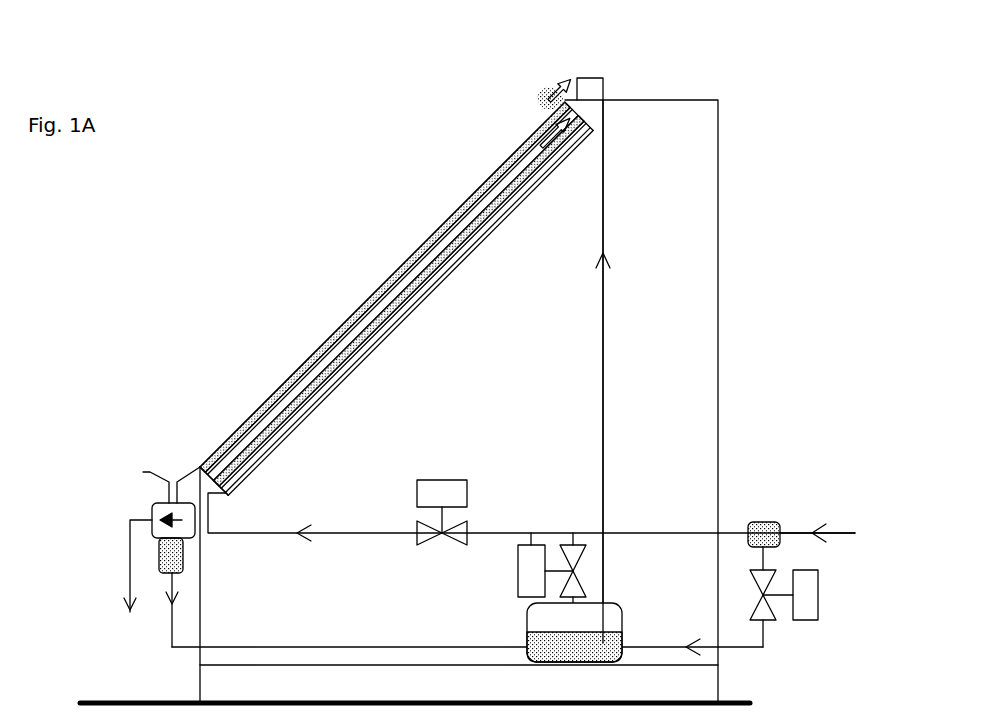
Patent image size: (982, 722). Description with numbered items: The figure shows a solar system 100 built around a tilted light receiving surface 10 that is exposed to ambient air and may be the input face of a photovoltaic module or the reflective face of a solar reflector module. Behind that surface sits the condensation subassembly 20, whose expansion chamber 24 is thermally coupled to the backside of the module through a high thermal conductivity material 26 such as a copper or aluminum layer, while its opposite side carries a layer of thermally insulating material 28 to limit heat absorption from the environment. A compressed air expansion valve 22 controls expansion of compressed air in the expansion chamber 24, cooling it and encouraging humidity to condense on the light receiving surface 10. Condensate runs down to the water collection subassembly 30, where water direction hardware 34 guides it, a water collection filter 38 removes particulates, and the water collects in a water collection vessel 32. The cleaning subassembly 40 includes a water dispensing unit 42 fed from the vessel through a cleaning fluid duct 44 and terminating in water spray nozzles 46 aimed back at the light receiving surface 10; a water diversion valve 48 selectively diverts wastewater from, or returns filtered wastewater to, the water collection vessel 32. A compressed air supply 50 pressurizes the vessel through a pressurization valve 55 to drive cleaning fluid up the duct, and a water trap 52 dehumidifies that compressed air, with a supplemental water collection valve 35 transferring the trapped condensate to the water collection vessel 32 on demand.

The solar system 100 is at (359, 136).
The light receiving surface 10 is at (400, 302).
The condensation subassembly 20 is at (420, 368).
The compressed air expansion valve 22 is at (417, 497).
The expansion chamber 24 is at (380, 298).
The high thermal conductivity material 26 is at (456, 218).
The layer of thermally insulating material 28 is at (483, 246).
The water collection subassembly 30 is at (172, 496).
The water collection vessel 32 is at (622, 612).
The water direction hardware 34 is at (150, 470).
The supplemental water collection valve 35 is at (805, 622).
The water collection filter 38 is at (183, 562).
The cleaning subassembly 40 is at (655, 73).
The water dispensing unit 42 is at (562, 77).
The cleaning fluid duct 44 is at (606, 355).
The water spray nozzles 46 is at (540, 100).
The water diversion valve 48 is at (152, 508).
The compressed air supply 50 is at (824, 530).
The water trap 52 is at (766, 520).
The pressurization valve 55 is at (531, 544).